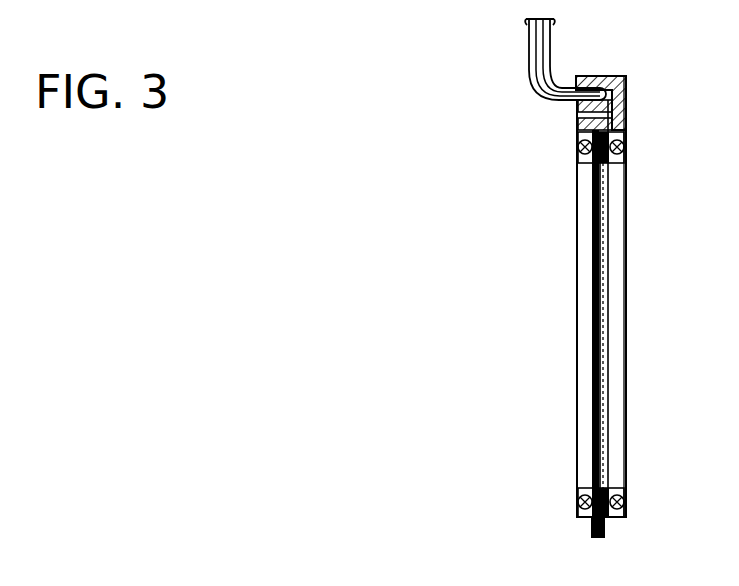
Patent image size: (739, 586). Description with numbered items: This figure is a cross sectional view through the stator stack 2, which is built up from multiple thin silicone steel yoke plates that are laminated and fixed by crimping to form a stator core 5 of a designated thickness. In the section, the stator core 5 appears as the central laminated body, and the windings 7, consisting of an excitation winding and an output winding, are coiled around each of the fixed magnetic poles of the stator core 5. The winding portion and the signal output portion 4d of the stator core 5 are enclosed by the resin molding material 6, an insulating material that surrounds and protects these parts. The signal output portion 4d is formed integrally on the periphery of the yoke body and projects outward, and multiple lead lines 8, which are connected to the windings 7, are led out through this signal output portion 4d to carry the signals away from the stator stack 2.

The stator stack 2 is at (633, 105).
The signal output portion 4d is at (580, 104).
The stator core 5 is at (592, 353).
The resin molding material 6 is at (626, 436).
The windings 7 is at (627, 148).
The lead lines 8 is at (565, 59).